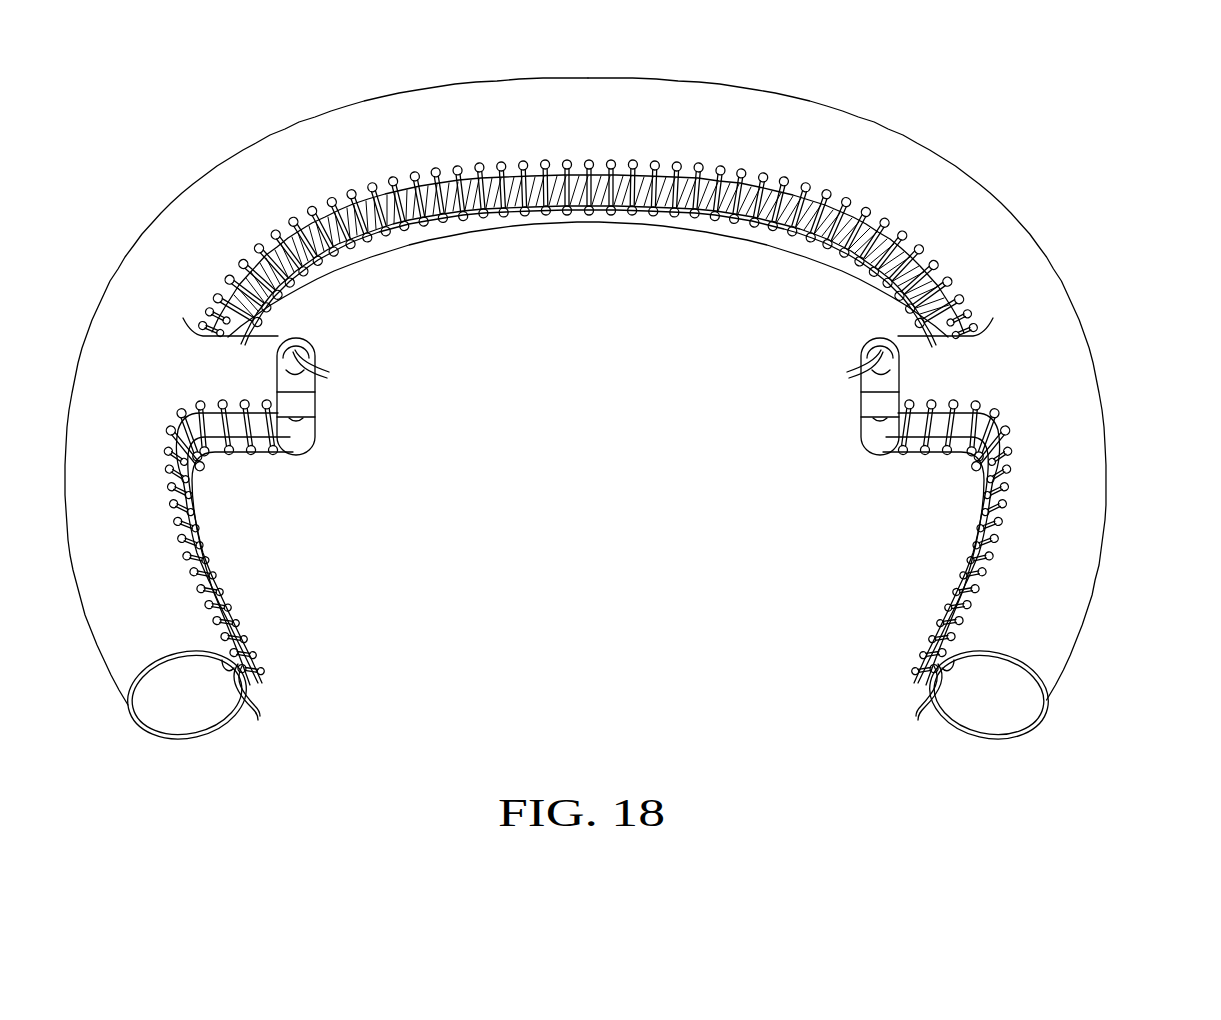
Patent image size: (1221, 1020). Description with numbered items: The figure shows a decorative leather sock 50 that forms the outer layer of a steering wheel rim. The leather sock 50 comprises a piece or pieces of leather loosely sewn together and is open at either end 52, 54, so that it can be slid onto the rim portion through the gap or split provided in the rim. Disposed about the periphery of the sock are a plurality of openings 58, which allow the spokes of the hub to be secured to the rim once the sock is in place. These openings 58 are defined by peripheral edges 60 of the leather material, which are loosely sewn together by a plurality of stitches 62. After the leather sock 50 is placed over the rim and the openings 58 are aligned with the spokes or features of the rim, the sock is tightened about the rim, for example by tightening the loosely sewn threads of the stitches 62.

The leather sock 50 is at (1075, 228).
The first open end 52 is at (197, 737).
The second open end 54 is at (980, 717).
The openings 58 is at (297, 437).
The peripheral edges 60 is at (253, 672).
The stitches 62 is at (610, 212).